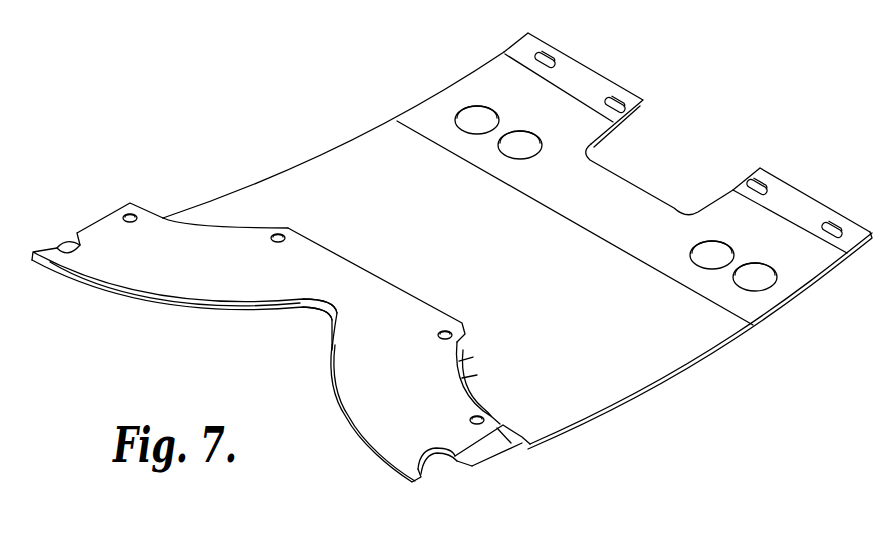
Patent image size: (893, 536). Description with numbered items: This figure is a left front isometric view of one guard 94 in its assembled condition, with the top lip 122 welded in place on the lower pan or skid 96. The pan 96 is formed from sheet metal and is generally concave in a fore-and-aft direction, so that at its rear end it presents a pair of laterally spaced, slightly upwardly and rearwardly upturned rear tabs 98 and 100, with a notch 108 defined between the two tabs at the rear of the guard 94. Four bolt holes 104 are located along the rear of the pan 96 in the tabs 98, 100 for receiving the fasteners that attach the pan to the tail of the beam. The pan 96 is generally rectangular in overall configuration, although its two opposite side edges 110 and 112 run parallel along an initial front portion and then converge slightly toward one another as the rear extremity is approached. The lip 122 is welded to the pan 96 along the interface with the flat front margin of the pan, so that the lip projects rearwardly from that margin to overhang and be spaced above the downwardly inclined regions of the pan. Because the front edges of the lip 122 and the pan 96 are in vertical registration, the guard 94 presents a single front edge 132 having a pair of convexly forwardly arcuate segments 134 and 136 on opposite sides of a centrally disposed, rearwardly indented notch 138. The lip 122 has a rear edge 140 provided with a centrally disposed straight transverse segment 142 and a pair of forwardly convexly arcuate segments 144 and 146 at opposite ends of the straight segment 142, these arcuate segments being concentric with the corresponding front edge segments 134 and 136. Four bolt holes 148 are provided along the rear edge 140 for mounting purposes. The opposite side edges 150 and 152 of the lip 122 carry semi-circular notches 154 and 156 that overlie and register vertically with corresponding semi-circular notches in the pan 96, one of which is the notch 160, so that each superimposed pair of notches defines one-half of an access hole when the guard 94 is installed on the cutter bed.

The guard 94 is at (106, 310).
The lower pan or skid 96 is at (633, 380).
The rear tab 98 is at (590, 72).
The rear tab 100 is at (800, 200).
The bolt hole 104 is at (545, 56).
The notch 108 is at (658, 165).
The side edge 110 is at (708, 356).
The side edge 112 is at (345, 148).
The top lip 122 is at (203, 290).
The front edge 132 is at (324, 397).
The convexly forwardly arcuate segment 134 is at (80, 283).
The convexly forwardly arcuate segment 136 is at (364, 452).
The notch 138 is at (323, 310).
The rear edge 140 is at (396, 274).
The straight transverse segment 142 is at (327, 250).
The forwardly convexly arcuate segment 144 is at (203, 228).
The forwardly convexly arcuate segment 146 is at (475, 365).
The bolt hole 148 is at (133, 212).
The side edge 150 is at (90, 224).
The side edge 152 is at (487, 442).
The semi-circular notch 154 is at (81, 248).
The semi-circular notch 156 is at (436, 447).
The semi-circular notch 160 is at (437, 461).